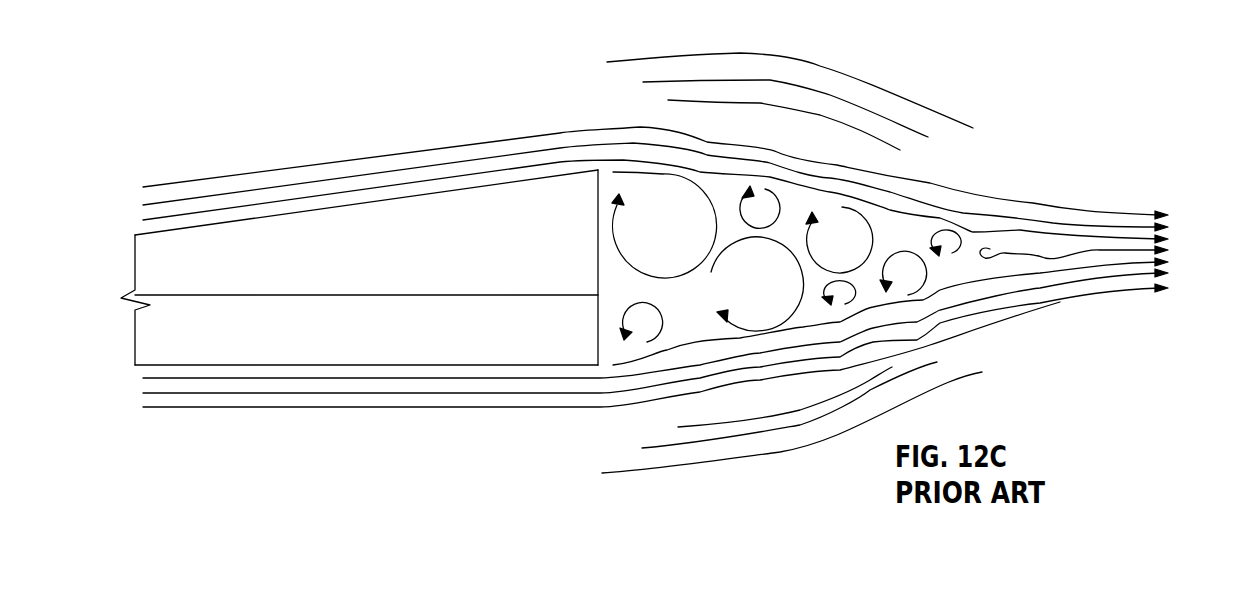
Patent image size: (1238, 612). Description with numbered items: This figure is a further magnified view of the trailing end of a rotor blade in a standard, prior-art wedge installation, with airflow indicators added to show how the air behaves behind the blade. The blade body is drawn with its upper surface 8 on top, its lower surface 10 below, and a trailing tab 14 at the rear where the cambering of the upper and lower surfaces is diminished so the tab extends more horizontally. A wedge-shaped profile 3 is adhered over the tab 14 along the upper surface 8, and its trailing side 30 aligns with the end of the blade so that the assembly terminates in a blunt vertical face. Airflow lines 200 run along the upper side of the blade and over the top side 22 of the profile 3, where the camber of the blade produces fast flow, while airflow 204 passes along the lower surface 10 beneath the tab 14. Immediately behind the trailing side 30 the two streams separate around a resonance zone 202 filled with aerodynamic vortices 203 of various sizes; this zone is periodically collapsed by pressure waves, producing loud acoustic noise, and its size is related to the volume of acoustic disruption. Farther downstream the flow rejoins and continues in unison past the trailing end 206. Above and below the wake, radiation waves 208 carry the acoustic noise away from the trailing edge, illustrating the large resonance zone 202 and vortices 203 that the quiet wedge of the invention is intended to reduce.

The profile 3 is at (366, 214).
The upper surface 8 is at (250, 297).
The lower surface 10 is at (343, 285).
The trailing tab 14 is at (397, 346).
The top side of profile 22 is at (383, 200).
The trailing side 30 is at (597, 272).
The airflow lines 200 is at (226, 188).
The resonance zone 202 is at (710, 190).
The aerodynamic vortices 203 is at (908, 252).
The airflow 204 is at (495, 140).
The trailing end 206 is at (1132, 214).
The radiation waves 208 is at (831, 118).